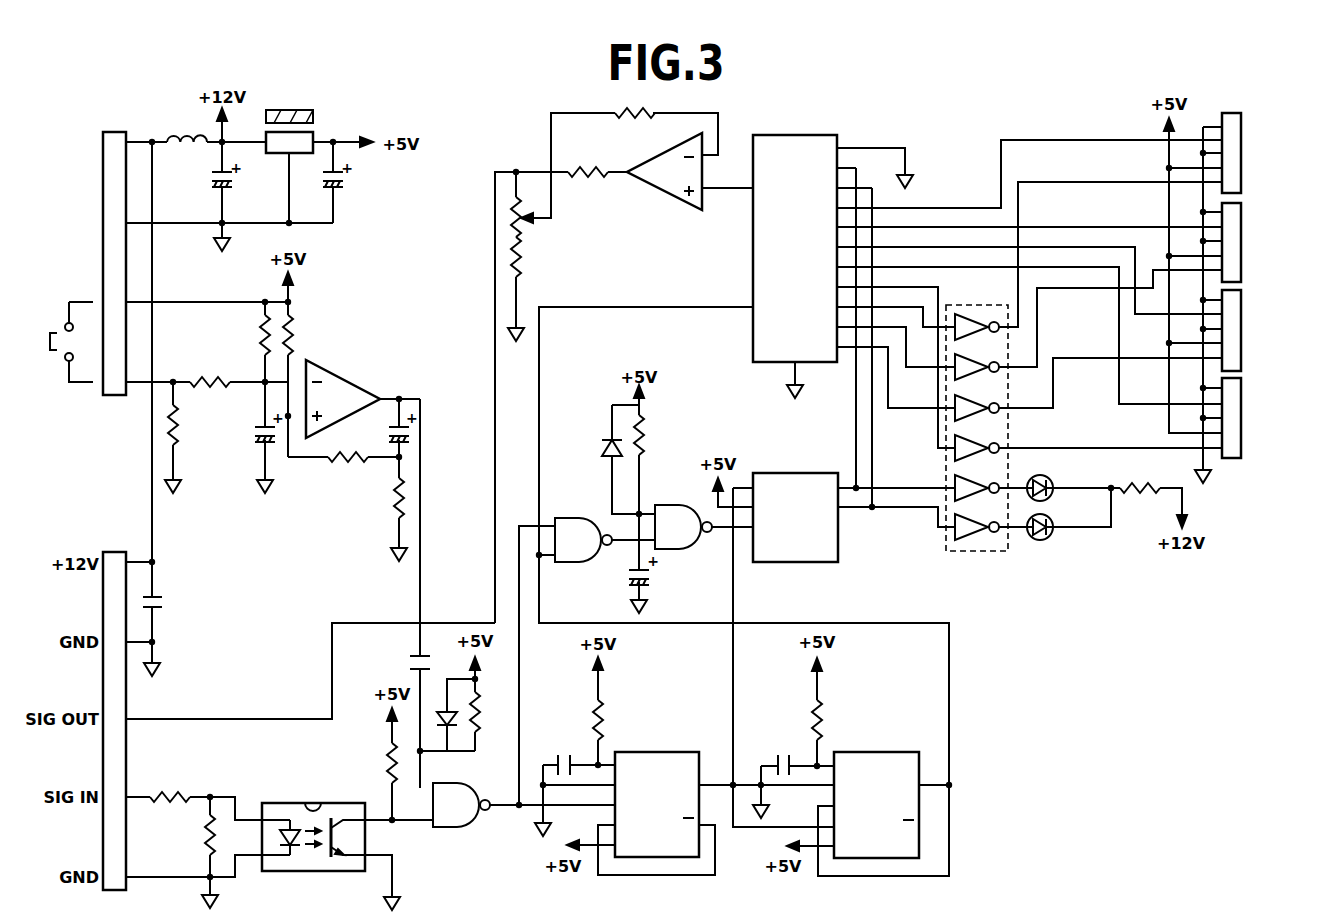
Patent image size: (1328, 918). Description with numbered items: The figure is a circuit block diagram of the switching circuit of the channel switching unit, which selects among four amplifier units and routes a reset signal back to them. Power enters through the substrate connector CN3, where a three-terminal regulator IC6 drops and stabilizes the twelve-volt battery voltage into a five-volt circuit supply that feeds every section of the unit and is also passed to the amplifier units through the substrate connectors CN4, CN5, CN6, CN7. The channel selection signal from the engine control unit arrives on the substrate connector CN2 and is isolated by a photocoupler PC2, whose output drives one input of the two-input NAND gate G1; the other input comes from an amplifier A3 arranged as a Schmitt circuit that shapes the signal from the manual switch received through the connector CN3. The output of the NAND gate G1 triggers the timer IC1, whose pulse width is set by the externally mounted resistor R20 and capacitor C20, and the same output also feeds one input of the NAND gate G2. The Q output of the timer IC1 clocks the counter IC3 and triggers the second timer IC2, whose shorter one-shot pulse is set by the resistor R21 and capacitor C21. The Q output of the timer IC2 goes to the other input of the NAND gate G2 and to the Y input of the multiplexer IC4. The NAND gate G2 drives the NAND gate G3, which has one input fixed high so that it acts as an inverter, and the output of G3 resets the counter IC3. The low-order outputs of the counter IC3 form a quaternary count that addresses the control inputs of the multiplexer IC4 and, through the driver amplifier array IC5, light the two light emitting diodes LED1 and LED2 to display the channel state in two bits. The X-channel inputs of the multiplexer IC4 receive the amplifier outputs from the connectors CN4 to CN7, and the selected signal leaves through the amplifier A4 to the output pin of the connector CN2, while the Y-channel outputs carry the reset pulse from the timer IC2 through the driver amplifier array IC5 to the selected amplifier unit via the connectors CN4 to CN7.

The substrate connector CN3 is at (113, 251).
The three-terminal regulator IC6 is at (282, 148).
The amplifier for a Schmitt circuit A3 is at (343, 398).
The amplifying amplifier A4 is at (664, 171).
The substrate connector CN2 is at (113, 708).
The photocoupler PC2 is at (313, 826).
The two-input NAND gate G1 is at (461, 796).
The two-input NAND gate G2 is at (583, 531).
The two-input NAND gate G3 is at (683, 518).
The capacitor C20 is at (566, 754).
The resistor R20 is at (618, 720).
The timer IC1 is at (657, 795).
The capacitor C21 is at (783, 754).
The resistor R21 is at (837, 720).
The timer IC2 is at (876, 795).
The counter IC3 is at (795, 508).
The multiplexer IC4 is at (795, 238).
The driver amplifier array IC5 is at (977, 418).
The light emitting diode LED1 is at (1065, 484).
The light emitting diode LED2 is at (1065, 524).
The substrate connector CN4 is at (1264, 153).
The substrate connector CN5 is at (1264, 242).
The substrate connector CN6 is at (1264, 330).
The substrate connector CN7 is at (1264, 418).